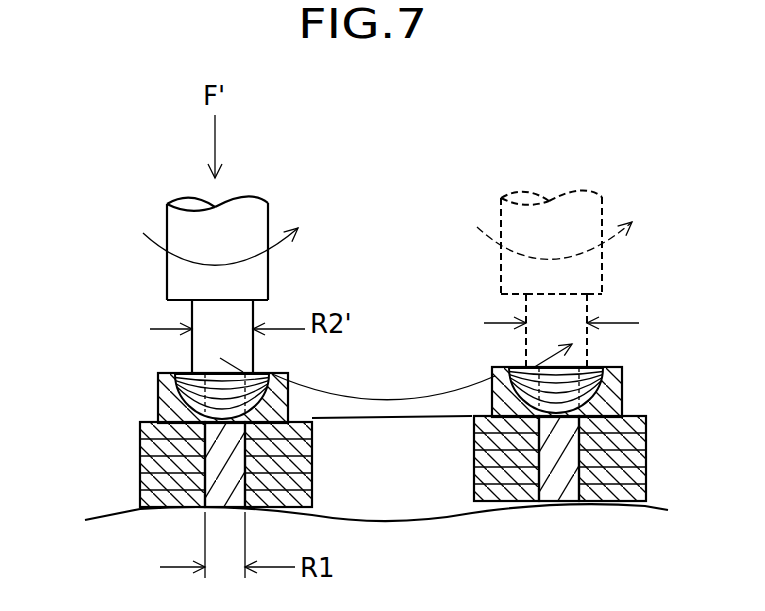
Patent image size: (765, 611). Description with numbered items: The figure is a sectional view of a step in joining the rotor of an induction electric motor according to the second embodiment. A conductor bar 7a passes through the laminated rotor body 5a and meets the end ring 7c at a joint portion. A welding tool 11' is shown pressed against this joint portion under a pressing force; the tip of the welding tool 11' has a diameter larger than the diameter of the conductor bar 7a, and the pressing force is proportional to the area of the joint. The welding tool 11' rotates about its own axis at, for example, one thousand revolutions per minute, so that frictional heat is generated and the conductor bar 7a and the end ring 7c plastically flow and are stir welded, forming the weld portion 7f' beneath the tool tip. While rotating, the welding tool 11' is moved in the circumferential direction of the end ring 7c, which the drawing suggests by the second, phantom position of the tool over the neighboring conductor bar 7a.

The welding tool 11' is at (185, 284).
The weld portion 7f' is at (165, 383).
The end ring 7c is at (158, 410).
The laminated ceramic body 5a is at (140, 470).
The conductor bar 7a is at (292, 473).